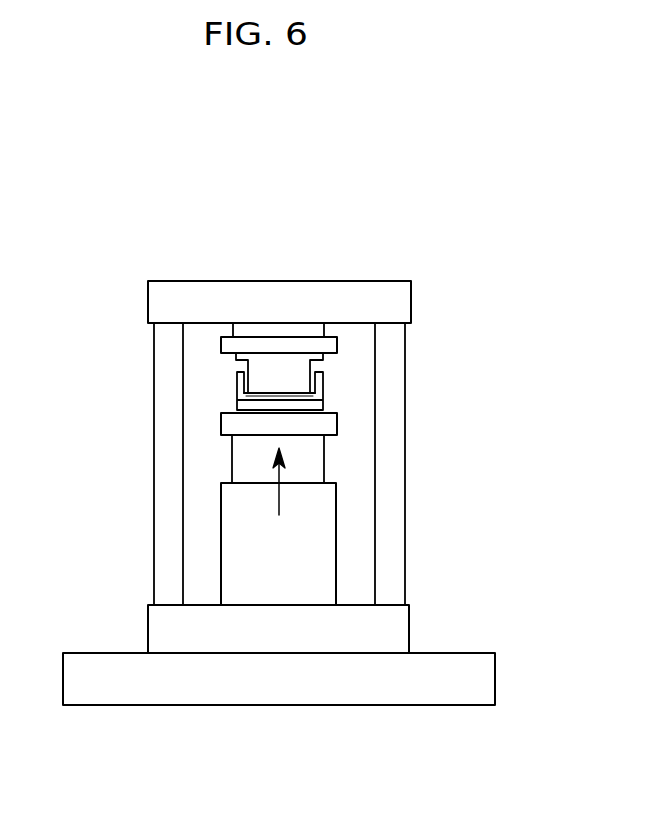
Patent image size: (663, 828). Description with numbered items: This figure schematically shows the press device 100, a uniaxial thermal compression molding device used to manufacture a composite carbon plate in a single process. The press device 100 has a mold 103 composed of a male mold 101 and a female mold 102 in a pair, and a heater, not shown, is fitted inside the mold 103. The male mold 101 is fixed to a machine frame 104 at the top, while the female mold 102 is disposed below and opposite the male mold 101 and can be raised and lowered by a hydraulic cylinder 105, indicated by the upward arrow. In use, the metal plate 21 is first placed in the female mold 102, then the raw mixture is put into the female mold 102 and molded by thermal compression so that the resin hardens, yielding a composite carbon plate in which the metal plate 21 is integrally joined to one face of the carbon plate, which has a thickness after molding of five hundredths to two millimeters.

The press device 100 is at (433, 243).
The male mold 101 is at (258, 365).
The female mold 102 is at (245, 396).
The mold 103 is at (78, 323).
The machine frame 104 is at (167, 475).
The hydraulic cylinder 105 is at (310, 550).
The metal plate 21 is at (288, 406).